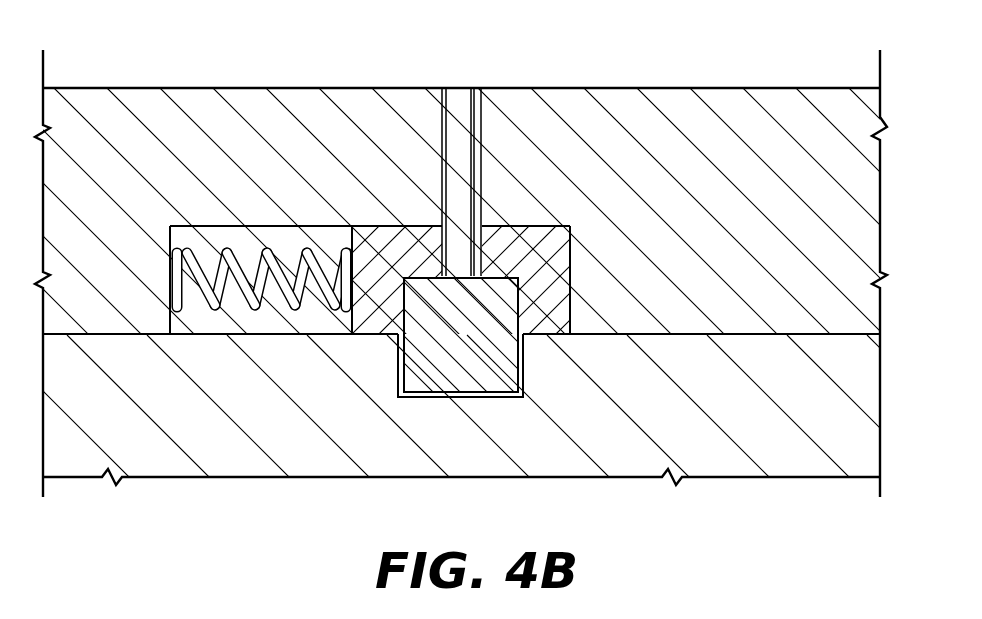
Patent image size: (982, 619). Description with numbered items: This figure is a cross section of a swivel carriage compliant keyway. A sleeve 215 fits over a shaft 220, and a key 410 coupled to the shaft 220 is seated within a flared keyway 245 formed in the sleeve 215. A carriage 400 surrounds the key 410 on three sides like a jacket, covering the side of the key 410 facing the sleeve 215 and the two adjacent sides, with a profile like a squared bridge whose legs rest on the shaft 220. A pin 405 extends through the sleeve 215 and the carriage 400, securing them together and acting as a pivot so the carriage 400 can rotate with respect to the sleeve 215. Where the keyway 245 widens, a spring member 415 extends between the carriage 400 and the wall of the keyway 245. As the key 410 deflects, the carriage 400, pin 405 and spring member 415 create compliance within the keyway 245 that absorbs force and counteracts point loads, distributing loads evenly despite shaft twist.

The sleeve 215 is at (685, 313).
The shaft 220 is at (768, 403).
The keyway 245 is at (240, 237).
The carriage 400 is at (543, 313).
The pin 405 is at (458, 107).
The key 410 is at (461, 352).
The spring member 415 is at (257, 310).